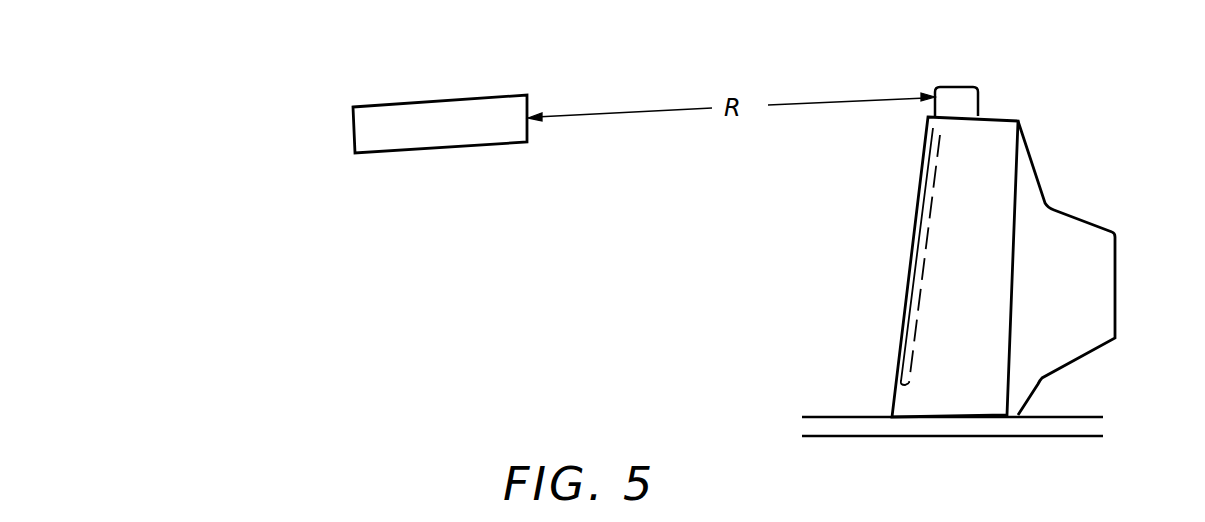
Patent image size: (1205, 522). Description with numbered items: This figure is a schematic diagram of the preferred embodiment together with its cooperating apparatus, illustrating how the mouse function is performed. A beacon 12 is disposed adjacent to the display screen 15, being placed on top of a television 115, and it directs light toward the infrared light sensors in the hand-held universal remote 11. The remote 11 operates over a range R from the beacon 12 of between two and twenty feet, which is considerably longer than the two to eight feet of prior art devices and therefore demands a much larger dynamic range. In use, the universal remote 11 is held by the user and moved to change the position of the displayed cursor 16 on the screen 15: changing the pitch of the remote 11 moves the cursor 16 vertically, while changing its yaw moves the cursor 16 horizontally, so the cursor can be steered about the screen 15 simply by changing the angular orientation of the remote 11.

The universal remote 11 is at (437, 97).
The beacon 12 is at (980, 100).
The display screen 15 is at (913, 230).
The displayed cursor 16 is at (938, 178).
The television 115 is at (1035, 197).